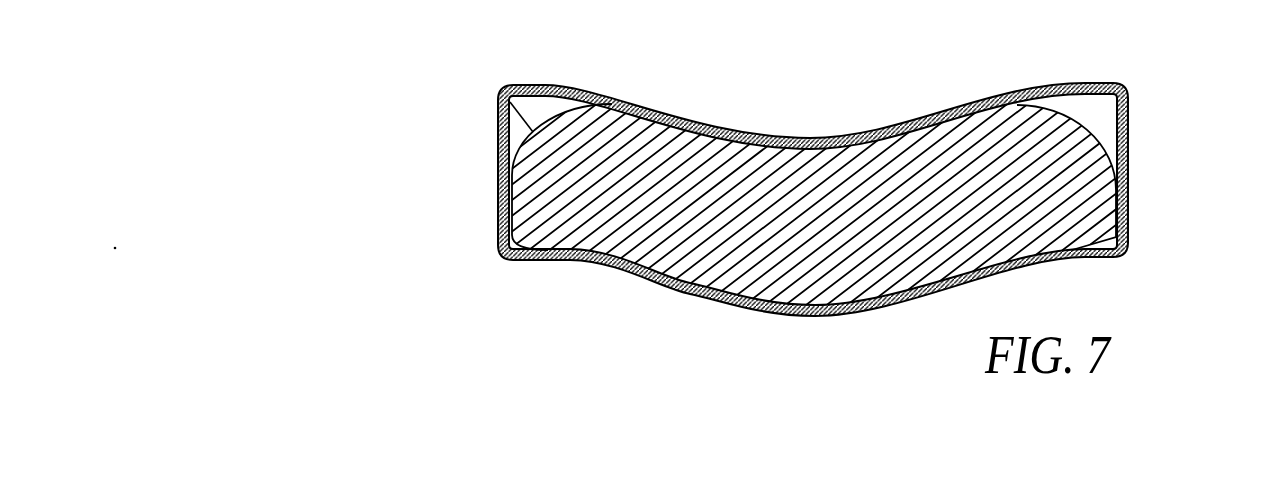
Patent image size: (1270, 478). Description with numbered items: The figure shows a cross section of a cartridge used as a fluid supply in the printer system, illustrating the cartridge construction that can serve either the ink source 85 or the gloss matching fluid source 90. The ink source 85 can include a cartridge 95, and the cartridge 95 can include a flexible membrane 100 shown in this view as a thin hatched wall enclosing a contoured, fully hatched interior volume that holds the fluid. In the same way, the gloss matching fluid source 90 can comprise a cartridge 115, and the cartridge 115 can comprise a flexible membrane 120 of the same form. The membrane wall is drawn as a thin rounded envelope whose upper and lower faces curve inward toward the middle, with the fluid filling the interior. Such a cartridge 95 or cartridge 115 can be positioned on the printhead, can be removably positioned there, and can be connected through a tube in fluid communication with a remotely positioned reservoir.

The ink source 85 is at (746, 163).
The gloss matching fluid source 90 is at (746, 163).
The flexible membrane 120 is at (482, 168).
The flexible membrane 100 is at (498, 110).
The cartridge 95 is at (1135, 145).
The cartridge 115 is at (1130, 115).